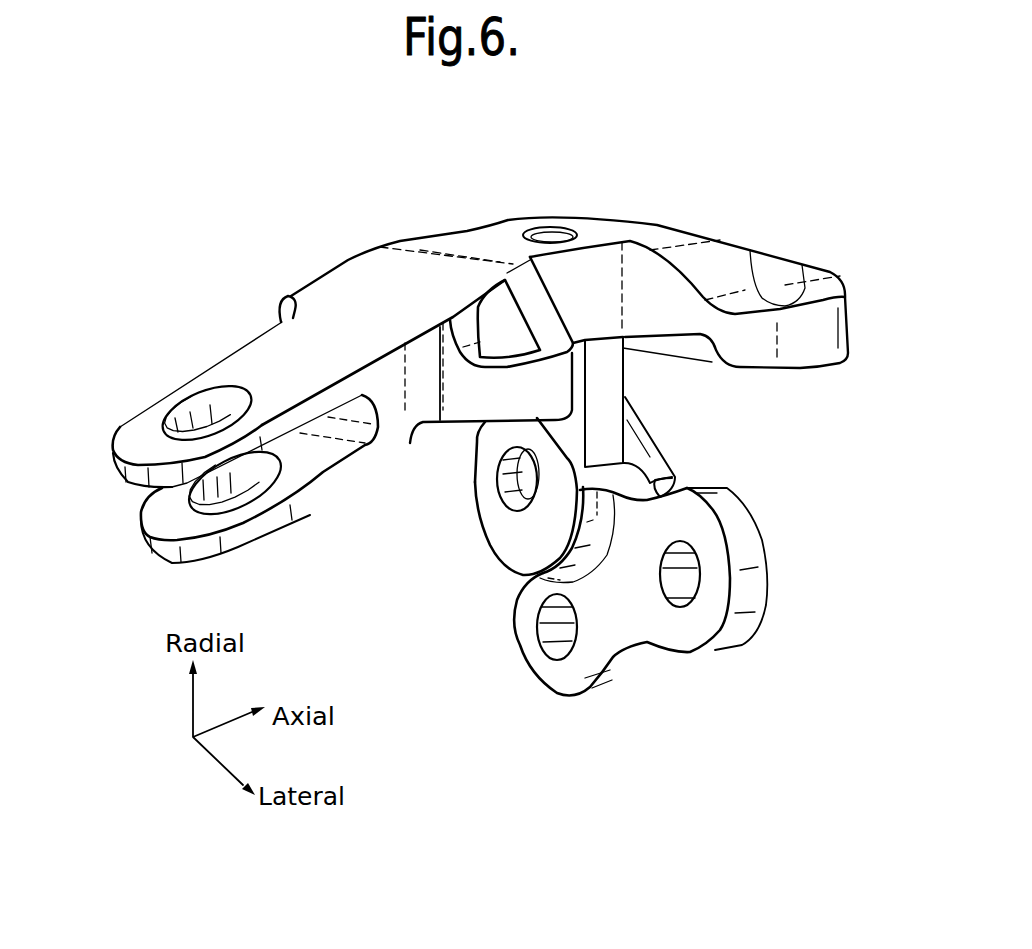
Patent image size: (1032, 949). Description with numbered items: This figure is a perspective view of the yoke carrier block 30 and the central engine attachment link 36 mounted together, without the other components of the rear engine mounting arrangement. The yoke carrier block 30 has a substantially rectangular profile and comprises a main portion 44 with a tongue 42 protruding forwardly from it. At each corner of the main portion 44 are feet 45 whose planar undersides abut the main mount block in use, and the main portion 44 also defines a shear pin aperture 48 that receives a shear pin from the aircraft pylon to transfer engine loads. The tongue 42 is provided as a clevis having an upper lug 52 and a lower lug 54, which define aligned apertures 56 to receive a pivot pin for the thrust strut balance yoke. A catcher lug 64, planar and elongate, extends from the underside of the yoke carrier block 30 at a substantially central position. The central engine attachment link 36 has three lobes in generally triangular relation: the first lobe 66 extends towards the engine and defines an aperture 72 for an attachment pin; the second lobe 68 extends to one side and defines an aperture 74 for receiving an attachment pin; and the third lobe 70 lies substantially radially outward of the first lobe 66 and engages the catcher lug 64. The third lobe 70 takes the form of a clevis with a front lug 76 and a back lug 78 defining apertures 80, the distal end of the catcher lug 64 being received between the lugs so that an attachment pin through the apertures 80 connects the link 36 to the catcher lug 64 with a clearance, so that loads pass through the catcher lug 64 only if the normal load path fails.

The yoke carrier block 30 is at (318, 247).
The central engine attachment link 36 is at (478, 604).
The tongue 42 is at (333, 350).
The main portion 44 is at (485, 240).
The feet 45 is at (555, 402).
The shear pin aperture 48 is at (548, 230).
The upper lug 52 is at (135, 413).
The lower lug 54 is at (168, 517).
The apertures 56 is at (198, 392).
The catcher lug 64 is at (610, 382).
The first lobe 66 is at (600, 643).
The second lobe 68 is at (750, 579).
The third lobe 70 is at (492, 438).
The aperture 72 is at (550, 640).
The aperture 74 is at (672, 585).
The front lug 76 is at (497, 535).
The back lug 78 is at (645, 420).
The apertures 80 is at (493, 490).